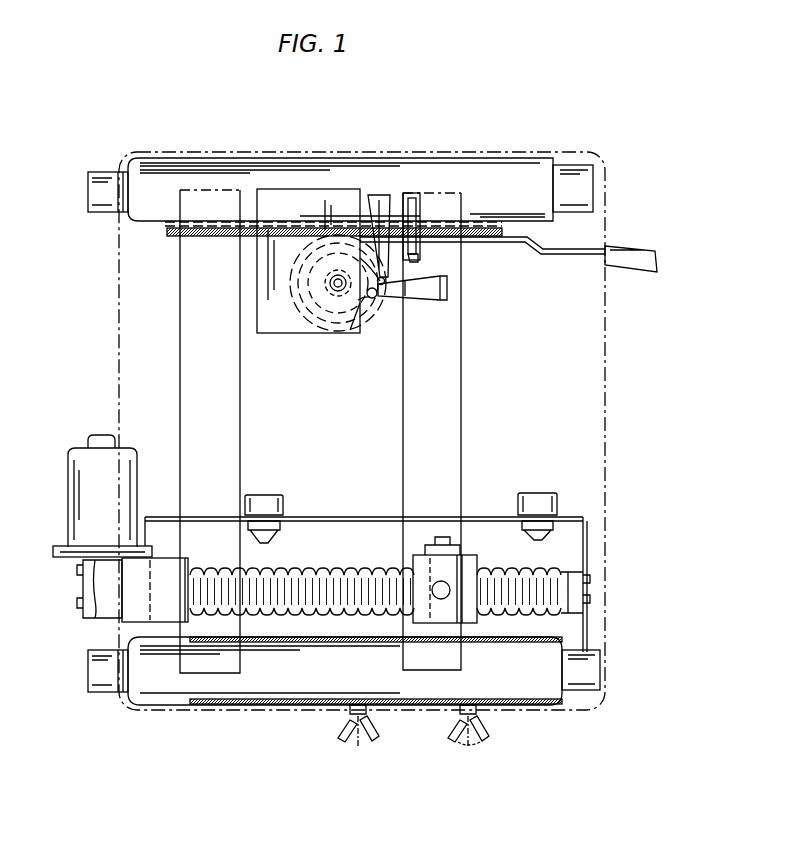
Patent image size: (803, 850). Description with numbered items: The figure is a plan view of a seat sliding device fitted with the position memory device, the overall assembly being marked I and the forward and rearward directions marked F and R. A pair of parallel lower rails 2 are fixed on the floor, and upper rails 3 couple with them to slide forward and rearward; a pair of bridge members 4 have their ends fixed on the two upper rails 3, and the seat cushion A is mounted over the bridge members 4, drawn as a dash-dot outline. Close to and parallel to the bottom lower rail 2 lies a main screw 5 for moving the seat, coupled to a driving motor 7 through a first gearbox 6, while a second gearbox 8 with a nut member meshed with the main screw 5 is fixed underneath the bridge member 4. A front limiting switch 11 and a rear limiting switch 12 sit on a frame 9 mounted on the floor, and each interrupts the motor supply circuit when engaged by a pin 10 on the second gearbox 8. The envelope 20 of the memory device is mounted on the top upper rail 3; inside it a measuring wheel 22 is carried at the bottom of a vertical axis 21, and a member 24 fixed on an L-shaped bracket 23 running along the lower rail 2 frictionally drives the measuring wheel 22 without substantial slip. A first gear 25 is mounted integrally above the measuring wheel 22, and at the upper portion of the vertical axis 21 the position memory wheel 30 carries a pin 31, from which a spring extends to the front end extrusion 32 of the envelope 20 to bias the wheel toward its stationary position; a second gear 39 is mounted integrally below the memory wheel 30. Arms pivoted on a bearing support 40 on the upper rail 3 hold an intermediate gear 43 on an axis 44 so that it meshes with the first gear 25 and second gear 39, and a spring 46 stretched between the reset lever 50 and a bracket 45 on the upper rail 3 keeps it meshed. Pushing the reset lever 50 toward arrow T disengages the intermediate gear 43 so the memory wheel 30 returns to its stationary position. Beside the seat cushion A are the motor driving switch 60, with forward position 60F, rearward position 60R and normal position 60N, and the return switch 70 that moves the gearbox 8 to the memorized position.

The lower rail 2 is at (103, 185).
The upper rail 3 is at (265, 692).
The bridge member 4 is at (240, 448).
The main screw 5 is at (300, 618).
The first gearbox 6 is at (130, 590).
The driving motor 7 is at (68, 478).
The second gearbox 8 is at (468, 570).
The frame 9 is at (480, 517).
The pin 10 is at (441, 537).
The front limiting switch 11 is at (540, 495).
The rear limiting switch 12 is at (265, 497).
The envelope 20 is at (256, 333).
The vertical axis 21 is at (340, 286).
The measuring wheel 22 is at (373, 300).
The bracket 23 is at (167, 233).
The member 24 is at (195, 233).
The first gear 25 is at (290, 176).
The second gear 39 is at (292, 172).
The position memory wheel 30 is at (360, 303).
The pin 31 is at (335, 283).
The front end extrusion 32 is at (447, 287).
The bearing support 40 is at (378, 195).
The intermediate gear 43 is at (372, 296).
The axis 44 is at (383, 285).
The bracket 45 is at (415, 195).
The spring 46 is at (415, 256).
The reset lever 50 is at (640, 256).
The motor driving switch 60 is at (471, 780).
The rearward movement position 60R is at (410, 742).
The normal position 60N is at (479, 761).
The forward movement position 60F is at (523, 745).
The return switch 70 is at (365, 742).
The seat cushion A is at (581, 389).
The front F is at (684, 422).
The rear R is at (66, 352).
The arrow T is at (627, 193).
The assembly I is at (318, 131).